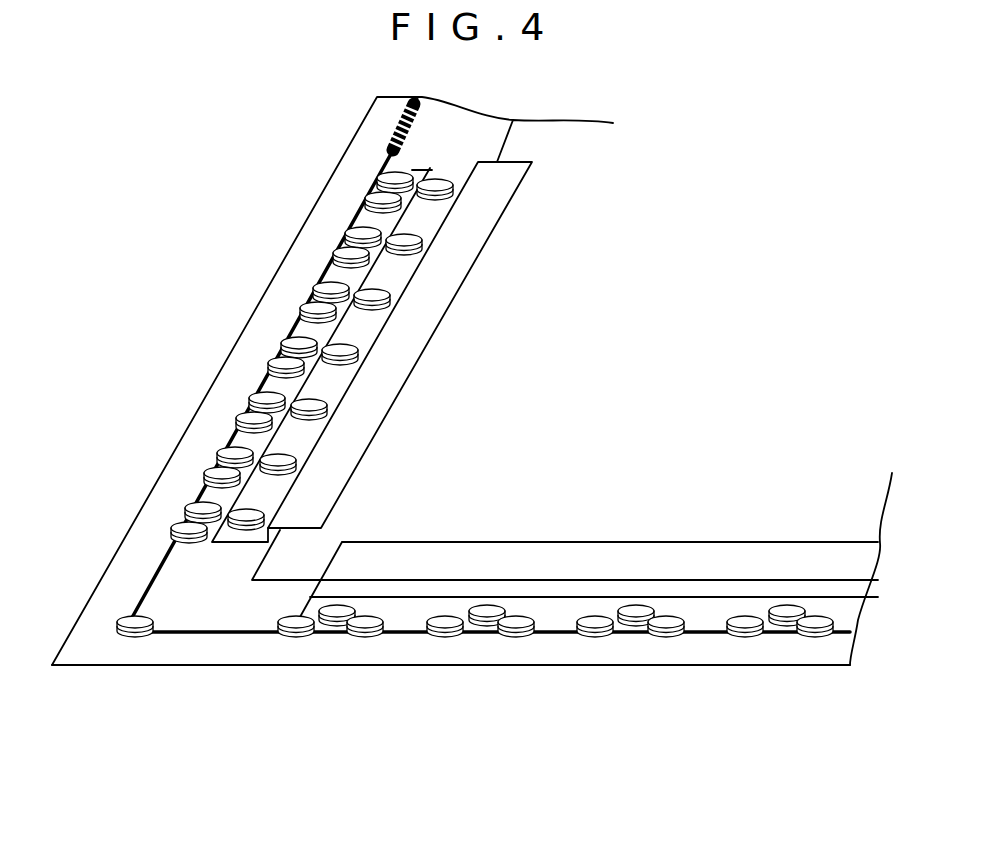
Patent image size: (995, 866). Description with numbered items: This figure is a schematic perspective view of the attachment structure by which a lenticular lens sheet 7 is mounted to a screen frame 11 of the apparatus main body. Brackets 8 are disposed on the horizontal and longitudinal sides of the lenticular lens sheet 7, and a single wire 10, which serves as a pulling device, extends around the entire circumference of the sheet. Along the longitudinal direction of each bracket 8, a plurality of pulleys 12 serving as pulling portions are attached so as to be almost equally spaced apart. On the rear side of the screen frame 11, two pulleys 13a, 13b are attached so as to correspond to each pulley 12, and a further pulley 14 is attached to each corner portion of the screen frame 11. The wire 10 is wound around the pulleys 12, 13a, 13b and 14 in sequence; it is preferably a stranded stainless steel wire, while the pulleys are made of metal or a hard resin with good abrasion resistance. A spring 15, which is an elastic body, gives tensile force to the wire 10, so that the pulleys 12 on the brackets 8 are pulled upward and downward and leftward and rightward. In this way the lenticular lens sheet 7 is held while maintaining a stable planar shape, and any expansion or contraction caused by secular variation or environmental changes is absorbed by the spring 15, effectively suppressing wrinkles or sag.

The lenticular lens sheet 7 is at (278, 568).
The bracket 8 is at (383, 380).
The wire 10 is at (210, 640).
The screen frame 11 is at (160, 667).
The pulley 12 is at (455, 184).
The pulley 13a is at (379, 177).
The pulley 13b is at (366, 198).
The pulley 14 is at (135, 640).
The spring 15 is at (400, 126).